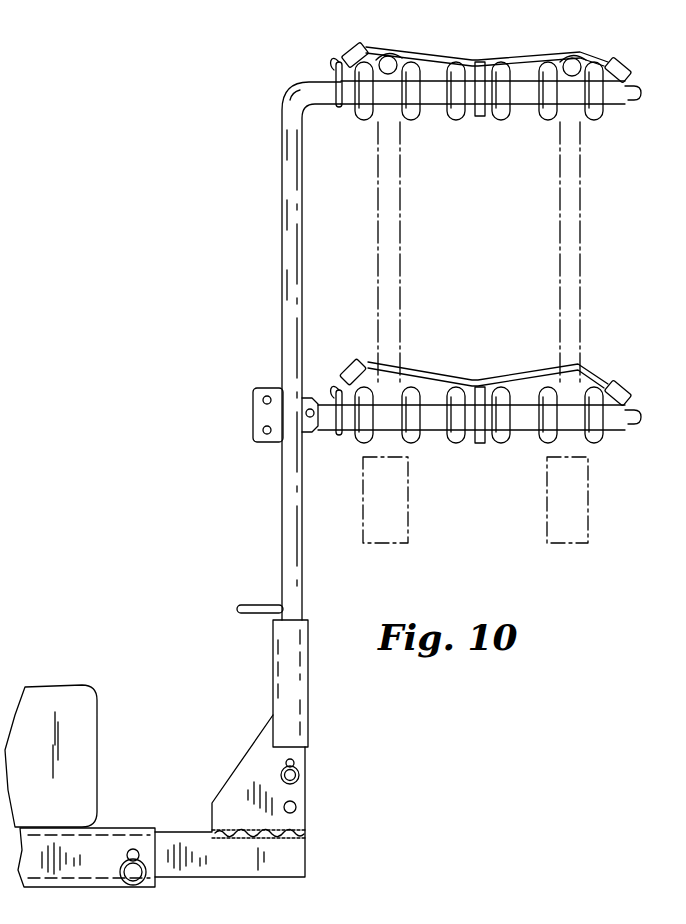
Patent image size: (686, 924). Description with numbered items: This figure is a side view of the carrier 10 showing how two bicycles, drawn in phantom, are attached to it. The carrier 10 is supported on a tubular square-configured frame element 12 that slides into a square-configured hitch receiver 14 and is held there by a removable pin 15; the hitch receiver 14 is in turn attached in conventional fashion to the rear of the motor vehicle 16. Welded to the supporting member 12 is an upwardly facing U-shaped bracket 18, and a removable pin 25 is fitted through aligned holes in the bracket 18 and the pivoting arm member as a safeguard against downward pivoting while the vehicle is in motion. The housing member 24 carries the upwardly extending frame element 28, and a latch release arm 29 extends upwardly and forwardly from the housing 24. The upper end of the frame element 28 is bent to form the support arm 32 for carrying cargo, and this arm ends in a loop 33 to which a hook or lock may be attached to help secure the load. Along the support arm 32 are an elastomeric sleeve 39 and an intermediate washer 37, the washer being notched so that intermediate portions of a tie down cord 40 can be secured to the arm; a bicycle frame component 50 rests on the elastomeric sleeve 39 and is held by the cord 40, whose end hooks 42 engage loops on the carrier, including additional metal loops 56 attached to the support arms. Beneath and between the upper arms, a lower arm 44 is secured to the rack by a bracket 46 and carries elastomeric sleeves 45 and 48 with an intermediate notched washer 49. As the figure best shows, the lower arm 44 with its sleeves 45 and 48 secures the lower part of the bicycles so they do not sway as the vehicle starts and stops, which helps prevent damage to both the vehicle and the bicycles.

The carrier 10 is at (268, 258).
The tubular square-configured frame element 12 is at (280, 862).
The hitch receiver 14 is at (113, 832).
The removable pin 15 is at (136, 850).
The motor vehicle 16 is at (70, 700).
The U-shaped bracket 18 is at (303, 795).
The housing member 24 is at (283, 660).
The removable pin 25 is at (303, 757).
The frame element 28 is at (303, 571).
The latch release arm 29 is at (250, 600).
The support arm 32 is at (318, 82).
The loop 33 is at (610, 100).
The intermediate washer 37 is at (480, 117).
The elastomeric sleeve 39 is at (592, 120).
The tie down cord 40 is at (478, 67).
The end hook 42 is at (348, 47).
The additional arm 44 is at (318, 426).
The elastomeric sleeve 45 is at (462, 443).
The bracket 46 is at (262, 414).
The elastomeric sleeve 48 is at (592, 440).
The intermediate notched washer 49 is at (480, 443).
The bicycle frame component 50 is at (390, 60).
The metal loop 56 is at (336, 110).